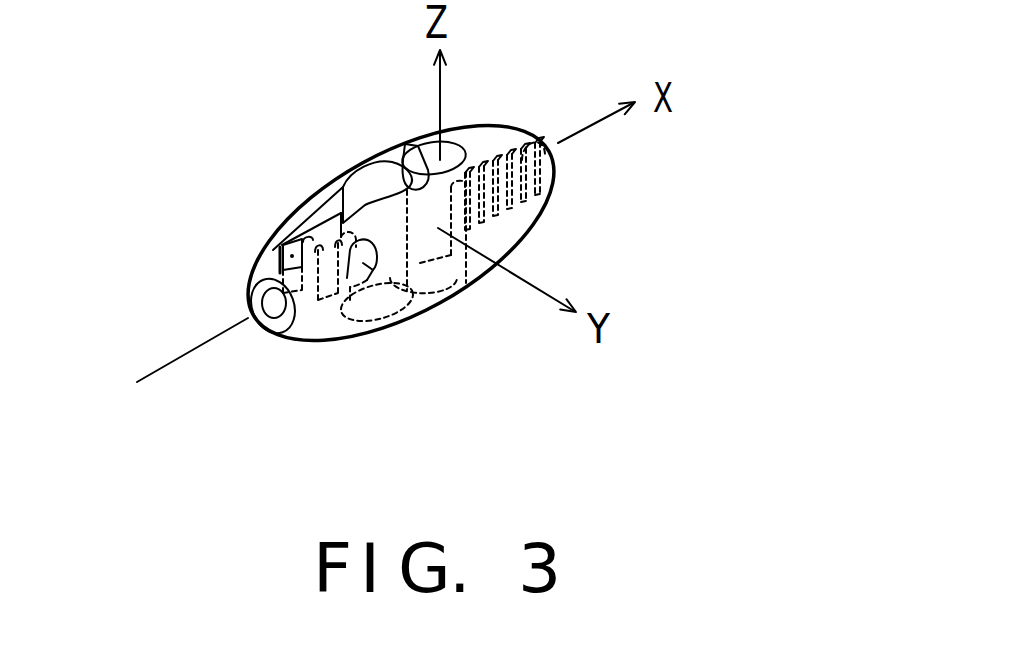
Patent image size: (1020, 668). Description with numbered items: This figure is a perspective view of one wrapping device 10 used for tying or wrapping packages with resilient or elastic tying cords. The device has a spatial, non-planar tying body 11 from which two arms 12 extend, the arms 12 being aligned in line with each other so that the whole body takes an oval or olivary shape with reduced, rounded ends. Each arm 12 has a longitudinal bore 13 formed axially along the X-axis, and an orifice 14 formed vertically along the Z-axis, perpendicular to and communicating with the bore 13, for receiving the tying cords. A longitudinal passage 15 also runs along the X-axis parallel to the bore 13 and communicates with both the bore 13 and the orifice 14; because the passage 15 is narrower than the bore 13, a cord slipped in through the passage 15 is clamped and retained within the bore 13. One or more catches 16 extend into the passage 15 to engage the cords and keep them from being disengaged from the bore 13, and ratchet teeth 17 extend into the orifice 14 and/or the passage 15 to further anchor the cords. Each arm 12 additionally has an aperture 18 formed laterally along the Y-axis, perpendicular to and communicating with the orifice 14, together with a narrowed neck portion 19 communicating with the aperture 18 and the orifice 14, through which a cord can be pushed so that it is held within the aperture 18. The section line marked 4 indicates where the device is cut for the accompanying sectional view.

The wrapping device 10 is at (520, 123).
The tying body 11 is at (419, 318).
The arms 12 is at (482, 120).
The longitudinal bore 13 is at (274, 318).
The orifice 14 is at (377, 178).
The longitudinal passage 15 is at (322, 212).
The catches 16 is at (280, 273).
The ratchet teeth 17 is at (320, 262).
The aperture 18 is at (422, 163).
The narrowed neck portion 19 is at (417, 142).
The section line 4- 4 is at (167, 364).